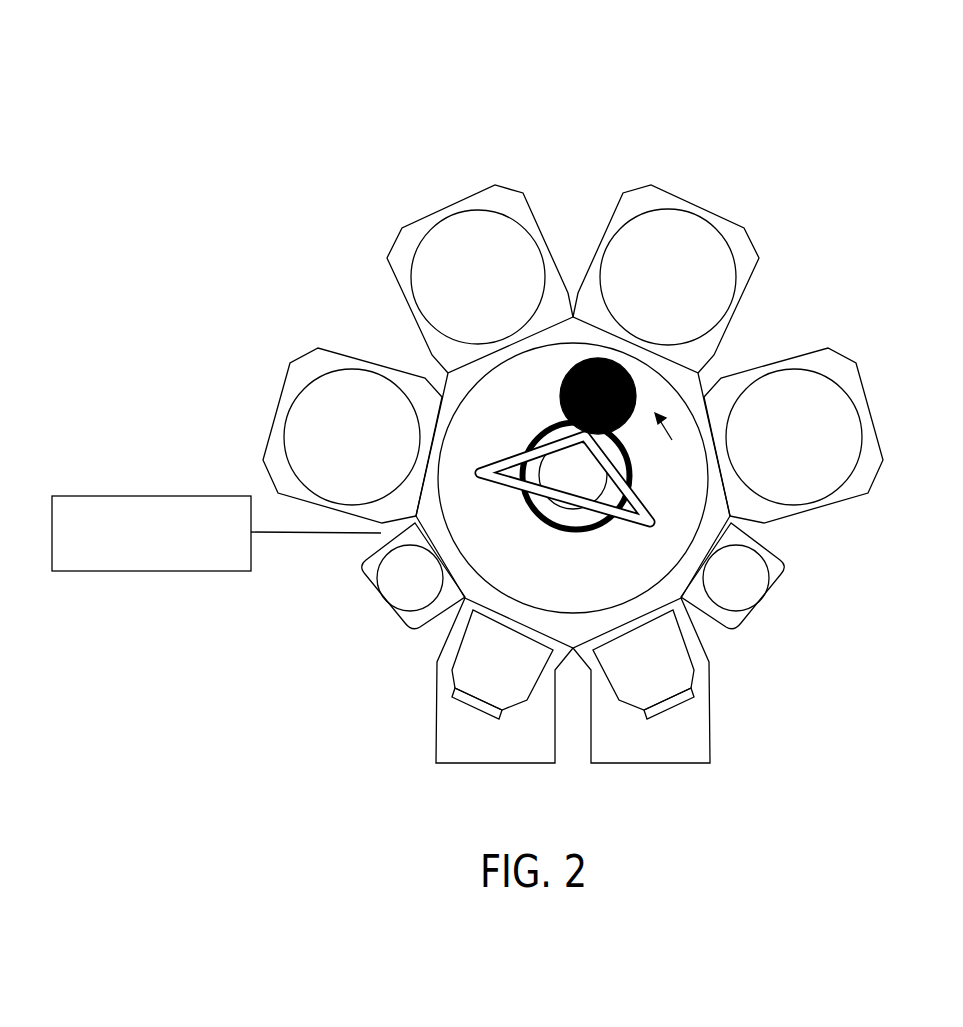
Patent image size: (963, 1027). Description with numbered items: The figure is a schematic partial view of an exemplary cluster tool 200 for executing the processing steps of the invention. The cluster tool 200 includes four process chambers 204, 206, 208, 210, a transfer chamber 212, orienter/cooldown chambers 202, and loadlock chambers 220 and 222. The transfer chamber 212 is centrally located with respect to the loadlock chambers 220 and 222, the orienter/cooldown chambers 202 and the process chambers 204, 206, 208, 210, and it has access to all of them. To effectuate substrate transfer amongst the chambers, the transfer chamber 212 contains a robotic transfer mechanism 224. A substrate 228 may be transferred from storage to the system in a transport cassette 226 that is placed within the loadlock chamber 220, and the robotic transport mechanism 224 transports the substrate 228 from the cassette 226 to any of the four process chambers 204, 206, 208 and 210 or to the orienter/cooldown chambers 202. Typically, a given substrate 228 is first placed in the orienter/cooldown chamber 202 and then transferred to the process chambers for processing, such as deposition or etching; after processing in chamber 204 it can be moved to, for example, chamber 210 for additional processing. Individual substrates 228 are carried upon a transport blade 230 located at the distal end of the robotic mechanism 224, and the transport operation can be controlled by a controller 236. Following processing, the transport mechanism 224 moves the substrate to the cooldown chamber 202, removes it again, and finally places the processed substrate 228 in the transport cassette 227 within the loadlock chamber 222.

The cluster tool 200 is at (698, 99).
The orienter/cooldown chambers 202 is at (380, 580).
The process chamber 204 is at (298, 440).
The process chamber 206 is at (423, 285).
The process chamber 208 is at (723, 285).
The process chamber 210 is at (820, 468).
The transfer chamber 212 is at (588, 586).
The loadlock chamber 220 is at (458, 738).
The loadlock chamber 222 is at (690, 742).
The robotic transfer mechanism 224 is at (533, 437).
The transport cassette 226 is at (463, 670).
The transport cassette 227 is at (680, 672).
The substrate 228 is at (561, 383).
The transport blade 230 is at (676, 445).
The controller 236 is at (88, 494).